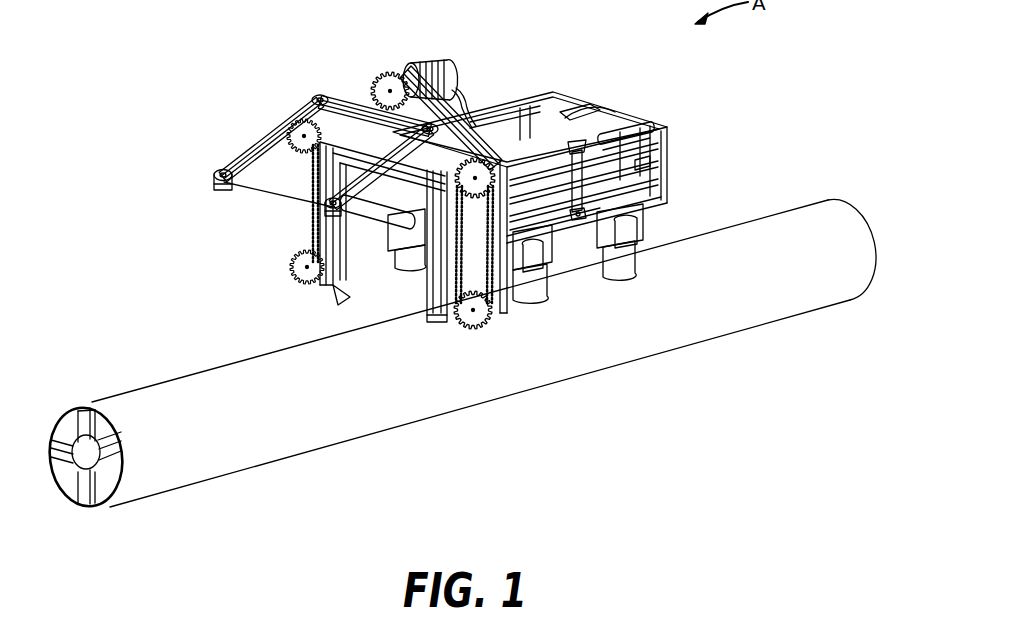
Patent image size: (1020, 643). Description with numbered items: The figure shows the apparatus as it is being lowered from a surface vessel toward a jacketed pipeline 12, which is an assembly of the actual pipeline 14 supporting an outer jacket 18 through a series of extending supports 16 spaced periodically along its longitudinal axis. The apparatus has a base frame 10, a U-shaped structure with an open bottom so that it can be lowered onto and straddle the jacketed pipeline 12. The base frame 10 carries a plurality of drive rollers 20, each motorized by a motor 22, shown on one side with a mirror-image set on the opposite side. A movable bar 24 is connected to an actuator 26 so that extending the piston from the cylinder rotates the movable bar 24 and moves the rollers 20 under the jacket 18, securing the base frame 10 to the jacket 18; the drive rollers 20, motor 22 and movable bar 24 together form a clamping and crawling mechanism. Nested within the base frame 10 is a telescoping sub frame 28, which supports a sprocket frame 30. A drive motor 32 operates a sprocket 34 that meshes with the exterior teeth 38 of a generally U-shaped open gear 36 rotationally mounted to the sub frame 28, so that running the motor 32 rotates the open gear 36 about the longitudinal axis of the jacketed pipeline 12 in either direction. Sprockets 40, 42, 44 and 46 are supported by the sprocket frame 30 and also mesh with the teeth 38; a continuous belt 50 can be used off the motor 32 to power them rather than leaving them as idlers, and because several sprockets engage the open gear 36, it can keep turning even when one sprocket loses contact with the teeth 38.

The base frame 10 is at (670, 187).
The jacketed pipeline 12 is at (228, 479).
The pipeline 14 is at (70, 487).
The extending supports 16 is at (85, 424).
The outer jacket 18 is at (243, 424).
The drive rollers 20 is at (538, 293).
The motor 22 is at (637, 230).
The movable bar 24 is at (562, 223).
The actuator 26 is at (660, 142).
The sub frame 28 is at (593, 162).
The sprocket frame 30 is at (462, 108).
The drive motor 32 is at (438, 60).
The sprocket 34 is at (387, 63).
The open gear 36 is at (345, 296).
The exterior teeth 38 is at (450, 320).
The sprocket 40 is at (296, 268).
The sprocket 42 is at (300, 133).
The sprocket 44 is at (480, 323).
The sprocket 46 is at (492, 152).
The belt 50 is at (370, 96).